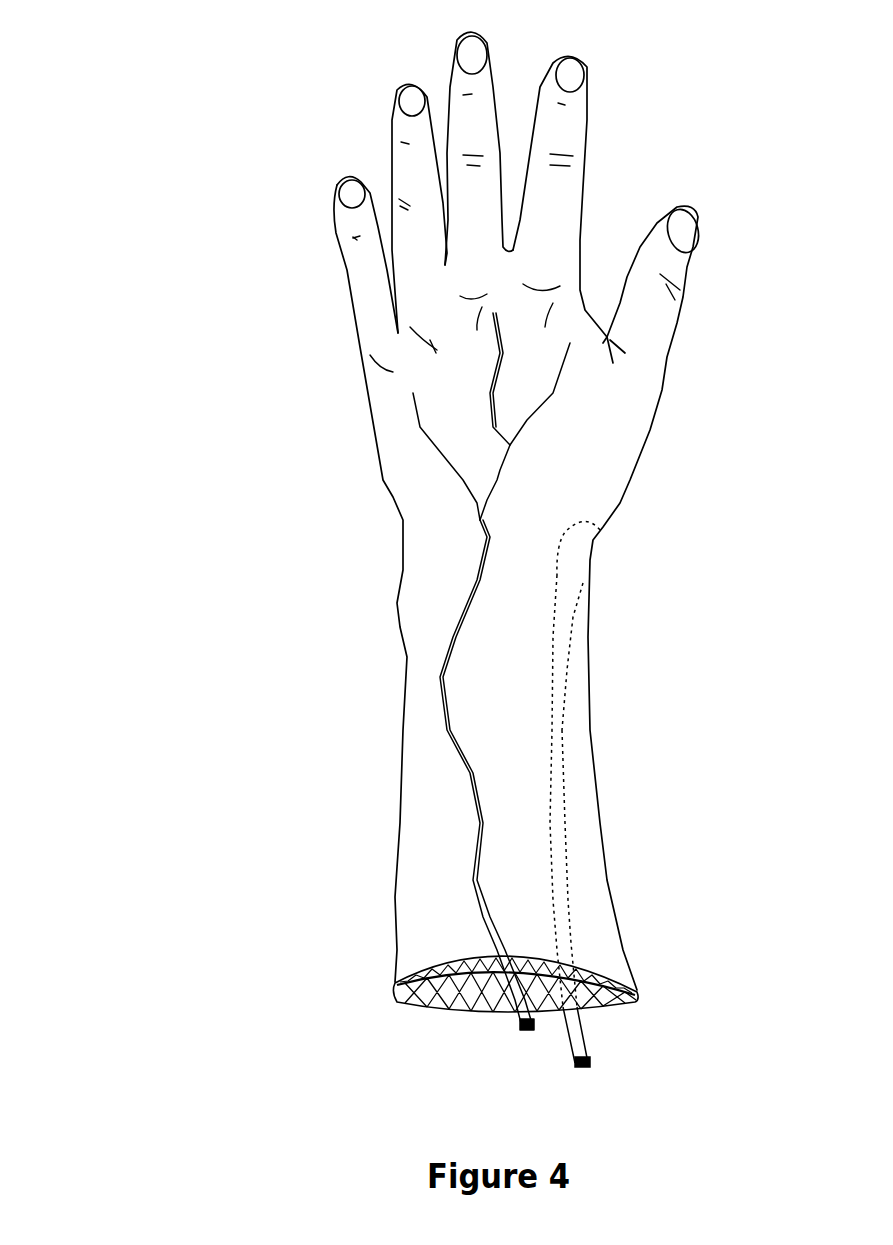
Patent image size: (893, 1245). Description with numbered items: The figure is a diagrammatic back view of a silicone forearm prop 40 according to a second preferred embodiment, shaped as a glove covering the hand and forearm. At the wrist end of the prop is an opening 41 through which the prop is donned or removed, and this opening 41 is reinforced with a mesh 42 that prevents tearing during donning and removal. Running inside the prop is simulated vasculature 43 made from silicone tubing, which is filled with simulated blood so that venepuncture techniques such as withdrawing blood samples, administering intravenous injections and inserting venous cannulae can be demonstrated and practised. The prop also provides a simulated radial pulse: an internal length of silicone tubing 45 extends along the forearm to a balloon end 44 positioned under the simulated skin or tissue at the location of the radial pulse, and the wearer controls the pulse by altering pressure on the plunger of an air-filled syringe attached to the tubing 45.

The forearm prop 40 is at (200, 792).
The opening 41 is at (430, 1013).
The mesh 42 is at (637, 985).
The simulated vasculature 43 is at (477, 580).
The balloon end 44 is at (577, 558).
The silicone tubing 45 is at (553, 707).